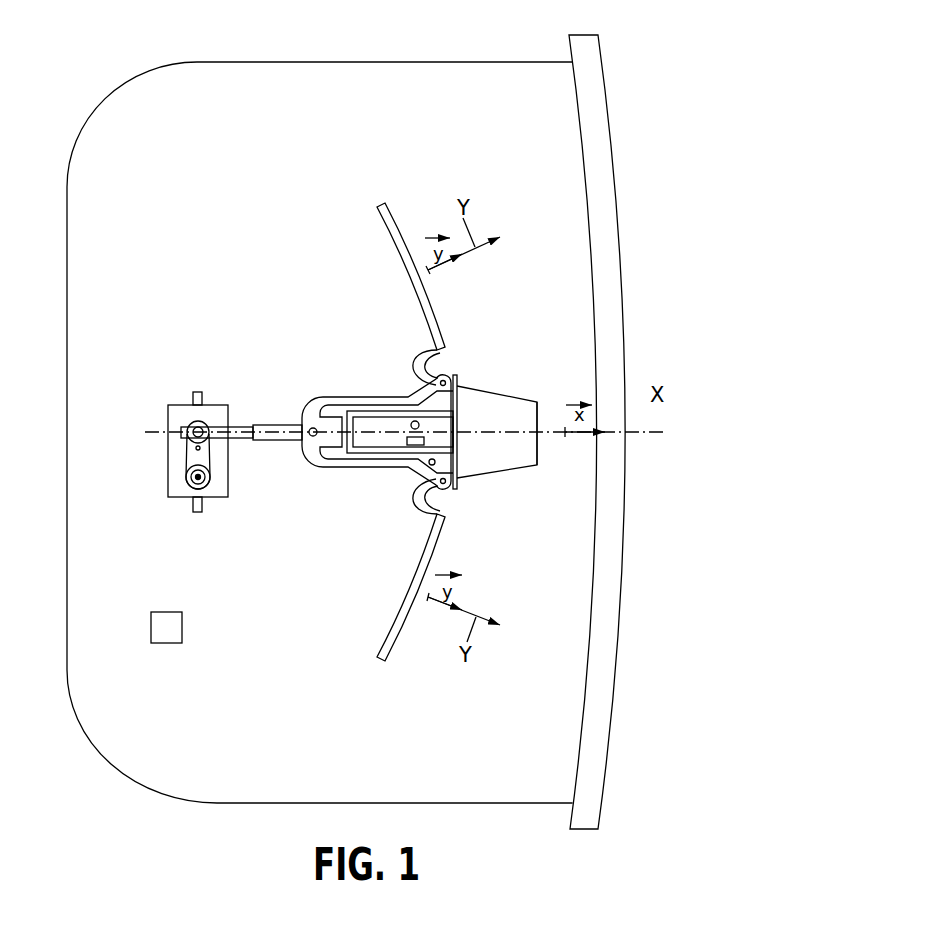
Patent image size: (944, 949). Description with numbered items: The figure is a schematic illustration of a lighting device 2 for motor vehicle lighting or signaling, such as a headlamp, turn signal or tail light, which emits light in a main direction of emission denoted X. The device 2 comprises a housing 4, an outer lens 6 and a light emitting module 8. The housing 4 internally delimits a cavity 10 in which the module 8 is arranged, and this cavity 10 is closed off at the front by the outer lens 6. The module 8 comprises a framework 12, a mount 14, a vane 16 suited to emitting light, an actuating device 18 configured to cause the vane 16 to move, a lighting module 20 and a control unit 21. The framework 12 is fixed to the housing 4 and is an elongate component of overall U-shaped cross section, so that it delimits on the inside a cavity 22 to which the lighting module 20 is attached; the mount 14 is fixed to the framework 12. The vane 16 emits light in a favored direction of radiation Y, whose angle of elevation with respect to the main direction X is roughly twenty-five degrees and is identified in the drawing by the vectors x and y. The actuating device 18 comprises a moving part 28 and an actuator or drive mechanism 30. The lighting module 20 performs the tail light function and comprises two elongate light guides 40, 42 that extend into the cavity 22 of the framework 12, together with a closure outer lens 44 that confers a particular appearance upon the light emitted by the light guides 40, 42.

The device 2 is at (684, 92).
The housing 4 is at (327, 62).
The outer lens 6 is at (605, 85).
The light emitting module 8 is at (323, 493).
The cavity 10 is at (188, 130).
The framework 12 is at (365, 415).
The mount 14 is at (333, 403).
The vane 16 is at (397, 215).
The actuating device 18 is at (178, 392).
The lighting module 20 is at (509, 386).
The control unit 21 is at (172, 643).
The cavity 22 is at (397, 420).
The moving part 28 is at (307, 421).
The drive mechanism 30 is at (145, 519).
The light guide 40 is at (412, 428).
The light guide 42 is at (413, 442).
The closure outer lens 44 is at (512, 471).